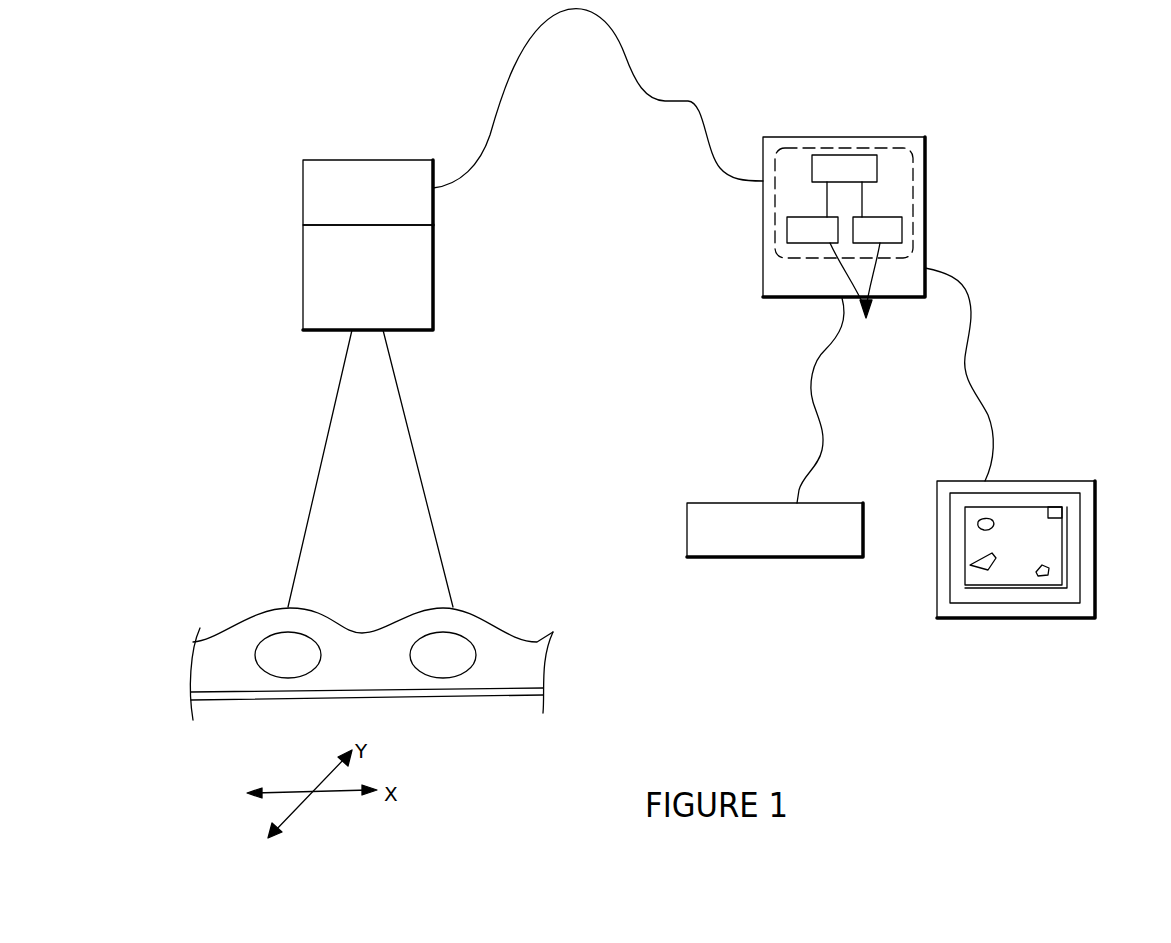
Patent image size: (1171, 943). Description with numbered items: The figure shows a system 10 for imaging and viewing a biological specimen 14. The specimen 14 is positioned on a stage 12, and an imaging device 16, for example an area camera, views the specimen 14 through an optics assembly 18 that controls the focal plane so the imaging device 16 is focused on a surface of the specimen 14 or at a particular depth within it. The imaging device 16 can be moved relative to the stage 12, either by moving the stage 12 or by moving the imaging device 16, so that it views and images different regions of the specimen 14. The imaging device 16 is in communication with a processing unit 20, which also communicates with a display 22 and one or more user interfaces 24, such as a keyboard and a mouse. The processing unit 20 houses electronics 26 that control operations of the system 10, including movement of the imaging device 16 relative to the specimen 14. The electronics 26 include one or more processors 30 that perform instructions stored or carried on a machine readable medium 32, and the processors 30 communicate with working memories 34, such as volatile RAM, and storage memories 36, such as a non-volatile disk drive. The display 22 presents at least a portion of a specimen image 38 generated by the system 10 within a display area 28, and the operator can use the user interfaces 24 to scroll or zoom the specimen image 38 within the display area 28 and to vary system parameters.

The system 10 is at (292, 121).
The stage 12 is at (413, 693).
The specimen 14 is at (483, 622).
The imaging device 16 is at (303, 192).
The optics assembly 18 is at (303, 275).
The processing unit 20 is at (715, 222).
The display 22 is at (1032, 481).
The user interface 24 is at (687, 528).
The electronics 26 is at (912, 132).
The display area 28 is at (965, 572).
The processor 30 is at (810, 170).
The machine readable medium 32 is at (855, 292).
The working memory 34 is at (800, 243).
The storage memory 36 is at (902, 231).
The specimen image 38 is at (1047, 548).